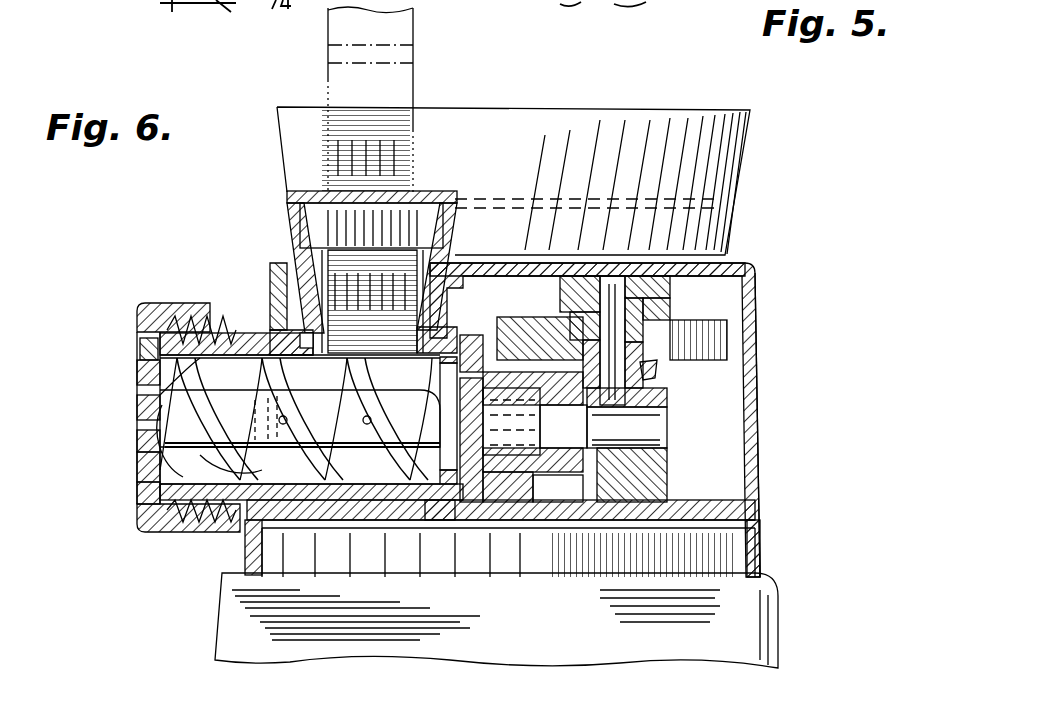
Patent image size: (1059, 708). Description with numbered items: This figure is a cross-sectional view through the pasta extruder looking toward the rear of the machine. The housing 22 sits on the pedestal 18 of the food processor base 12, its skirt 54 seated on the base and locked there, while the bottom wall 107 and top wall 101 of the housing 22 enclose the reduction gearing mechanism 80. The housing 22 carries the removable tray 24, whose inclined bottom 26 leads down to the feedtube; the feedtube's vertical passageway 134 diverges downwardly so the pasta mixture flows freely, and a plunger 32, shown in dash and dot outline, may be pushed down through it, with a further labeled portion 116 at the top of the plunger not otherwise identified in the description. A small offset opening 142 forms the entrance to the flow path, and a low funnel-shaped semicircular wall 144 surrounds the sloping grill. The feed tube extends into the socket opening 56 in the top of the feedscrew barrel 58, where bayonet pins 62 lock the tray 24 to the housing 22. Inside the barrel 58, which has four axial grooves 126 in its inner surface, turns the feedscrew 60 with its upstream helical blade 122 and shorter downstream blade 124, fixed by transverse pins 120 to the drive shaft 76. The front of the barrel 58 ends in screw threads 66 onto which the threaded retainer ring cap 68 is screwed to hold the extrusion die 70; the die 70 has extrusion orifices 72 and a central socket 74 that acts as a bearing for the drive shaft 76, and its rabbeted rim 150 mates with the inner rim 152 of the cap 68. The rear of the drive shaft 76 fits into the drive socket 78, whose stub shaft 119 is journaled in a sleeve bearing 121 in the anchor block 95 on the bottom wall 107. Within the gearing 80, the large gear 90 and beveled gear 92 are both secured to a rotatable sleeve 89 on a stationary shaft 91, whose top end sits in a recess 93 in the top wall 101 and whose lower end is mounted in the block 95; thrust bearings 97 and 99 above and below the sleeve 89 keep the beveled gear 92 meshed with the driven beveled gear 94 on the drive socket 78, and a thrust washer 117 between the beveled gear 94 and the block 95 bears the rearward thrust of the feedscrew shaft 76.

The base 12 is at (779, 641).
The pedestal 18 is at (727, 560).
The housing 22 is at (765, 431).
The tray 24 is at (755, 171).
The inclined bottom 26 is at (578, 200).
The plunger 32 is at (414, 88).
The skirt 54 is at (762, 540).
The socket opening 56 is at (428, 357).
The feedscrew barrel 58 is at (258, 338).
The feedscrew 60 is at (380, 399).
The bayonet pins 62 is at (460, 318).
The screw threads 66 is at (190, 535).
The threaded retainer ring cap 68 is at (137, 495).
The extrusion die 70 is at (137, 470).
The extrusion orifices 72 is at (137, 378).
The socket 74 is at (137, 412).
The drive shaft 76 is at (137, 440).
The drive socket 78 is at (480, 522).
The reduction gearing mechanism 80 is at (765, 347).
The rotatable sleeve 89 is at (670, 310).
The gear 90 is at (728, 352).
The stationary shaft 91 is at (668, 297).
The beveled gear 92 is at (650, 377).
The recess 93 is at (606, 275).
The beveled gear 94 is at (550, 521).
The block 95 is at (667, 482).
The thrust bearing 97 is at (645, 328).
The thrust bearing 99 is at (668, 403).
The top wall 101 is at (722, 265).
The bottom wall 107 is at (668, 535).
The agitator shaft 116 is at (415, 20).
The thrust washer 117 is at (668, 492).
The stub shaft 119 is at (667, 432).
The transverse pins 120 is at (287, 416).
The sleeve bearing 121 is at (665, 452).
The helical blade 122 is at (370, 521).
The second helical blade 124 is at (302, 521).
The grooves 126 is at (235, 345).
The vertical passageway 134 is at (457, 252).
The opening 142 is at (432, 193).
The funnel-shaped semicircular wall 144 is at (455, 228).
The rabbet 150 is at (140, 318).
The inner rim 152 is at (138, 348).